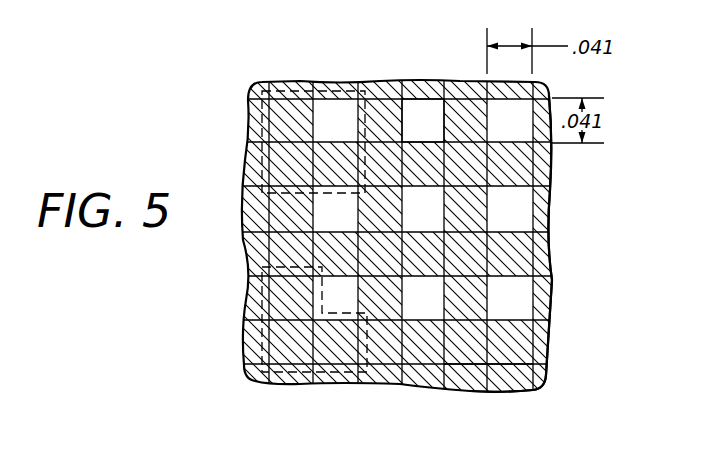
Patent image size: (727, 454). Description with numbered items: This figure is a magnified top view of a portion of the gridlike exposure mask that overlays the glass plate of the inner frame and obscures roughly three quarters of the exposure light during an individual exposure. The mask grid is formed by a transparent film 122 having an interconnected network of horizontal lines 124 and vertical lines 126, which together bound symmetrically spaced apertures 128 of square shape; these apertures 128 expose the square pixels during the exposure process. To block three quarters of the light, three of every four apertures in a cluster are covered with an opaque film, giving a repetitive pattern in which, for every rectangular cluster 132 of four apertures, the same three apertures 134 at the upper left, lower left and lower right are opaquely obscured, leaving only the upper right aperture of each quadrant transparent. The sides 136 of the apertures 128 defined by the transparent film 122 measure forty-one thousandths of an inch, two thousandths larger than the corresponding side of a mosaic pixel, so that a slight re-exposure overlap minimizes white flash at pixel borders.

The transparent film 122 is at (562, 249).
The horizontal lines 124 is at (555, 311).
The vertical lines 126 is at (537, 391).
The apertures 128 is at (505, 366).
The rectangular cluster 132 is at (262, 123).
The opaquely obscured apertures 134 is at (262, 309).
The sides of the apertures 136 is at (443, 112).